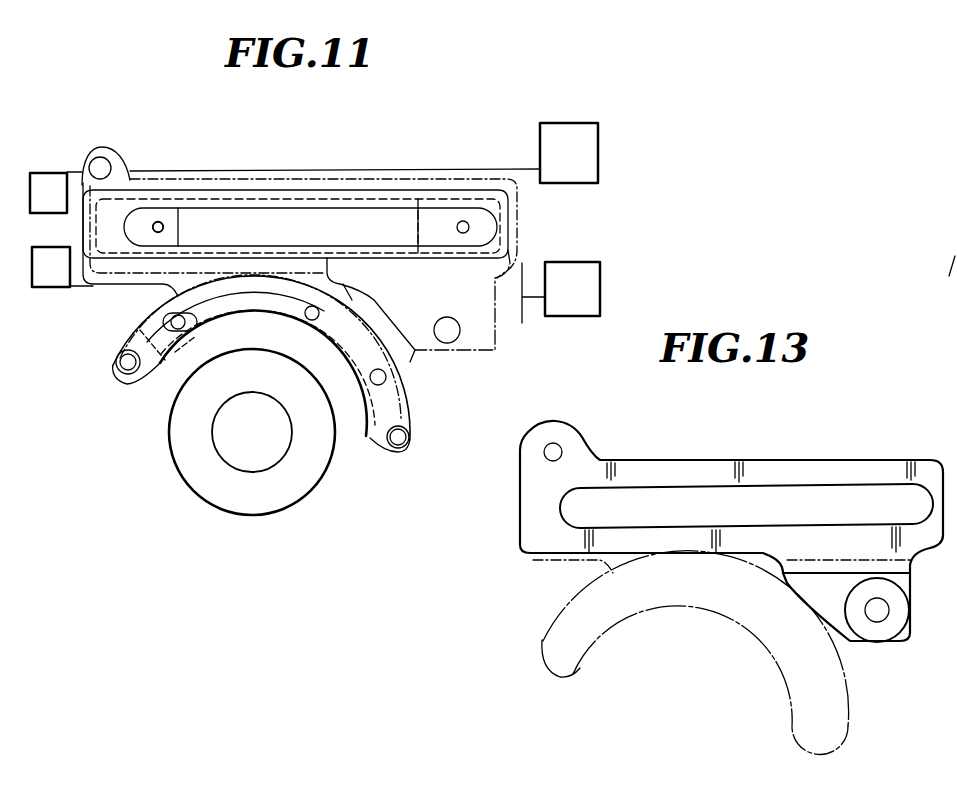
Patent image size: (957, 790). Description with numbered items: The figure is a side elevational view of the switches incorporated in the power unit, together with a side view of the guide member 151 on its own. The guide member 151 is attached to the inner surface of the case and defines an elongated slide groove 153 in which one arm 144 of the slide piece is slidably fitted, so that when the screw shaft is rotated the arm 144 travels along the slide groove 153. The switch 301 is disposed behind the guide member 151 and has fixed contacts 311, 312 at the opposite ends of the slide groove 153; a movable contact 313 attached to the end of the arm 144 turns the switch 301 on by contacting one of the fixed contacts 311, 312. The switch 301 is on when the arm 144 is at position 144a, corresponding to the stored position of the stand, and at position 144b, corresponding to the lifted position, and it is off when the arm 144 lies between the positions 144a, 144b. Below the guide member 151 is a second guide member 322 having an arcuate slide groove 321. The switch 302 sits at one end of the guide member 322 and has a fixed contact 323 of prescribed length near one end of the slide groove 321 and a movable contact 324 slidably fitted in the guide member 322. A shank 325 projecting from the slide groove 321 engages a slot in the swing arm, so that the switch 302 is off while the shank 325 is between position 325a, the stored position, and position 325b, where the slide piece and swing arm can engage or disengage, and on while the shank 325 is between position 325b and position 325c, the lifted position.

In FIG. 11, the guide member 151 is at (397, 177).
In FIG. 13, the guide member 151 is at (946, 432).
In FIG. 13, the slide groove 153 is at (835, 492).
In FIG. 11, the arm 144 is at (160, 223).
In FIG. 11, the arm position 144a is at (473, 227).
In FIG. 11, the arm position 144b is at (170, 233).
In FIG. 11, the switch 301 is at (97, 197).
In FIG. 11, the switch 302 is at (155, 322).
In FIG. 11, the fixed contact 311 is at (472, 198).
In FIG. 11, the fixed contact 312 is at (127, 200).
In FIG. 11, the movable contact 313 is at (143, 218).
In FIG. 11, the arcuate slide groove 321 is at (352, 333).
In FIG. 11, the guide member 322 is at (486, 441).
In FIG. 11, the fixed contact 323 is at (270, 303).
In FIG. 11, the movable contact 324 is at (203, 323).
In FIG. 11, the shank 325 is at (152, 335).
In FIG. 11, the shank position 325a is at (390, 385).
In FIG. 11, the shank position 325b is at (340, 285).
In FIG. 11, the shank position 325c is at (173, 315).